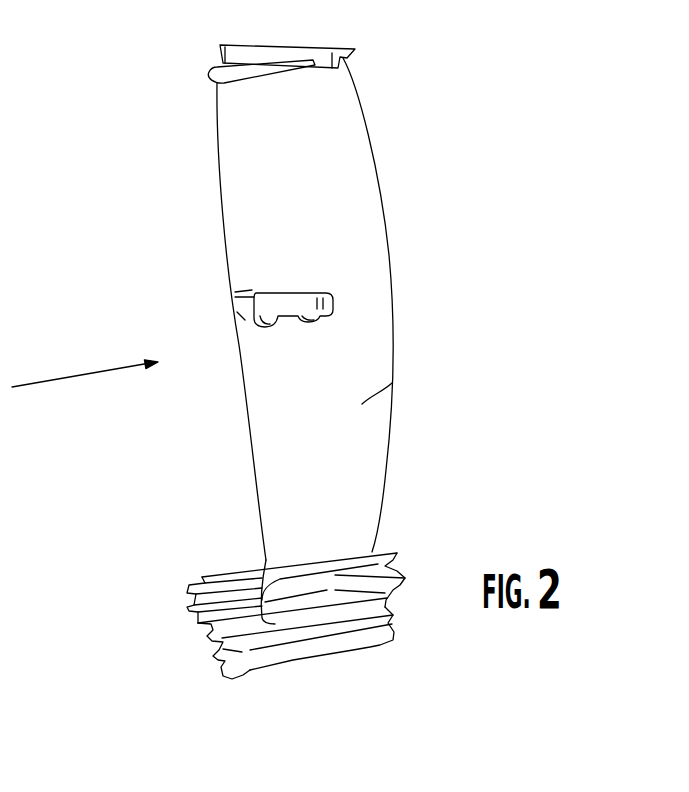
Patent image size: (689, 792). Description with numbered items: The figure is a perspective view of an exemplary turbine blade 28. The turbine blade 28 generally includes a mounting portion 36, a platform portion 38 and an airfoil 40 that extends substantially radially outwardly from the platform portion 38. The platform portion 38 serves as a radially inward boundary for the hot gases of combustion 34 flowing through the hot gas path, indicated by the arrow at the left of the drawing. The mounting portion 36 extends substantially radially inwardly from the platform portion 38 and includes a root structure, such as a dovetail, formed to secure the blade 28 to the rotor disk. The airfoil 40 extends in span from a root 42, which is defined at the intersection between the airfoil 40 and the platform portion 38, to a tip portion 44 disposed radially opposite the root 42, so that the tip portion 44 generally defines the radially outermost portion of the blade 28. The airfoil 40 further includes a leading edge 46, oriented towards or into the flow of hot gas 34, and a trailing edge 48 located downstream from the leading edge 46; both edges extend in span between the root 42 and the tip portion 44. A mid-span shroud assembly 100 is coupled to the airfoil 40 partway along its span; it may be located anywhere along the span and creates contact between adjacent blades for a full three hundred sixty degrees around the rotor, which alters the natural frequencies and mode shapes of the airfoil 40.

The turbine blade 28 is at (452, 140).
The hot gases of combustion 34 is at (62, 378).
The mounting portion 36 is at (193, 642).
The platform portion 38 is at (218, 568).
The airfoil 40 is at (392, 383).
The root 42 is at (263, 557).
The tip portion 44 is at (213, 42).
The leading edge 46 is at (243, 388).
The trailing edge 48 is at (390, 255).
The mid-span shroud assembly 100 is at (253, 272).